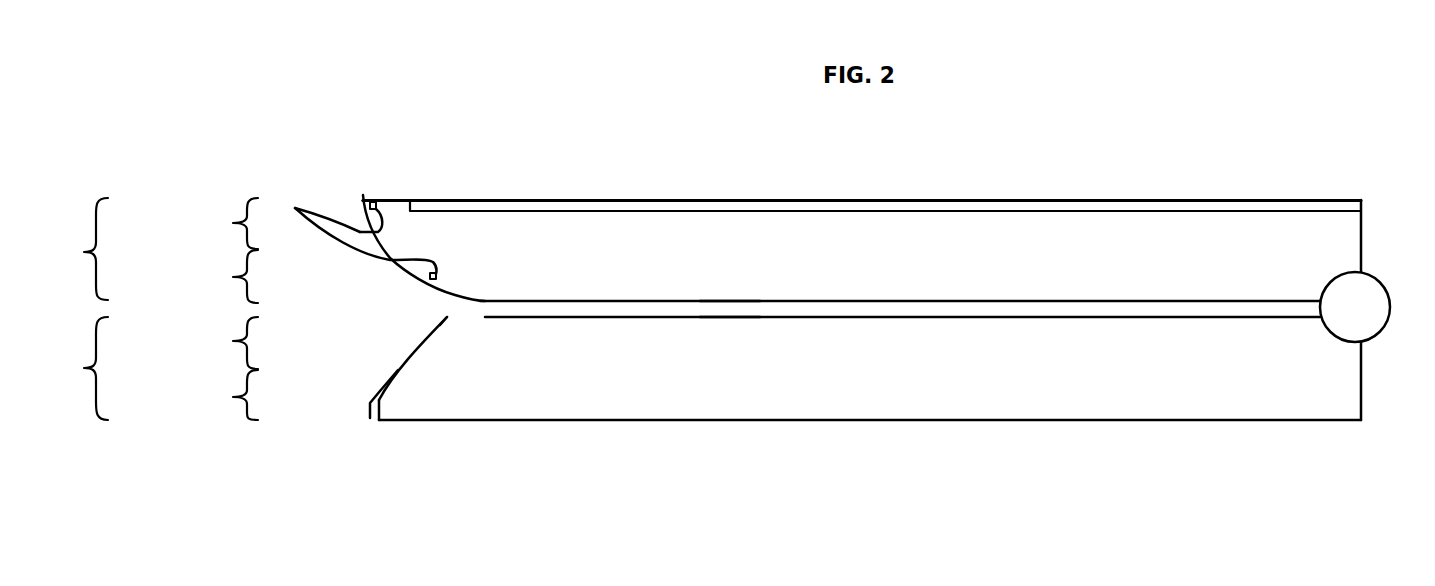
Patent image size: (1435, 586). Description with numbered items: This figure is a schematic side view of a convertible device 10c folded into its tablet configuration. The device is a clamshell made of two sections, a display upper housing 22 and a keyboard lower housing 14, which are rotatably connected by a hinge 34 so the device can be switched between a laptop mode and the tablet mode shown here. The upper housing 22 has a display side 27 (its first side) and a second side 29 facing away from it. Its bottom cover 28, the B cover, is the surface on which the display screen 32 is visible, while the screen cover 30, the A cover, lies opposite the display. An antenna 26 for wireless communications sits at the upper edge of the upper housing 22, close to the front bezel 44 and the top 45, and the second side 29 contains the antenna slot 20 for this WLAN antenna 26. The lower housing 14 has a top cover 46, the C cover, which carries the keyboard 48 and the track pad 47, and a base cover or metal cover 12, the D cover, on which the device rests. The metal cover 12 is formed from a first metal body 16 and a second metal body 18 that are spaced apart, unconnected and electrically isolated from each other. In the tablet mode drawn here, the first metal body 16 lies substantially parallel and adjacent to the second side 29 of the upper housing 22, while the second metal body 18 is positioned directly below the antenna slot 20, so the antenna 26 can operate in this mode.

The convertible device 10c is at (179, 122).
The display upper housing 22 is at (154, 250).
The keyboard lower housing 14 is at (154, 368).
The display screen 32 is at (872, 198).
The display side 27 is at (500, 178).
The bottom cover 28 is at (398, 187).
The hinge 34 is at (1367, 325).
The metal cover 12 is at (850, 303).
The first metal body 16 is at (587, 319).
The screen cover 30 is at (718, 312).
The keyboard 48 is at (758, 421).
The track pad 47 is at (440, 421).
The top cover 46 is at (389, 434).
The second metal body 18 is at (423, 335).
The second side 29 is at (435, 309).
The front bezel 44 is at (363, 195).
The top 45 is at (349, 201).
The antenna 26 is at (300, 212).
The antenna slot 20 is at (430, 279).